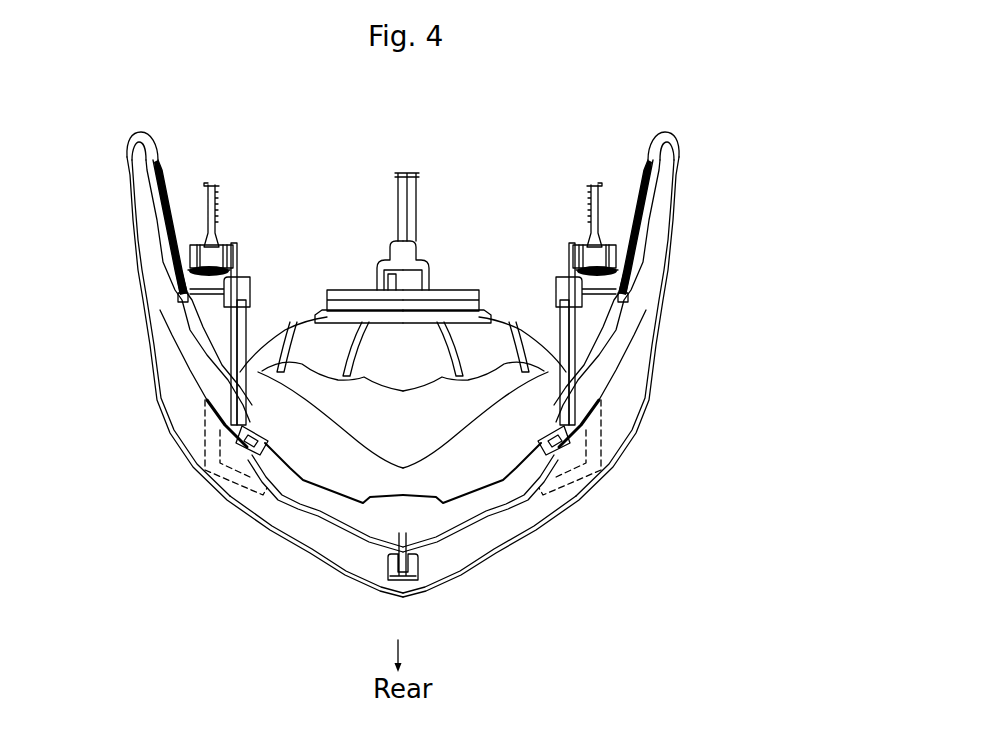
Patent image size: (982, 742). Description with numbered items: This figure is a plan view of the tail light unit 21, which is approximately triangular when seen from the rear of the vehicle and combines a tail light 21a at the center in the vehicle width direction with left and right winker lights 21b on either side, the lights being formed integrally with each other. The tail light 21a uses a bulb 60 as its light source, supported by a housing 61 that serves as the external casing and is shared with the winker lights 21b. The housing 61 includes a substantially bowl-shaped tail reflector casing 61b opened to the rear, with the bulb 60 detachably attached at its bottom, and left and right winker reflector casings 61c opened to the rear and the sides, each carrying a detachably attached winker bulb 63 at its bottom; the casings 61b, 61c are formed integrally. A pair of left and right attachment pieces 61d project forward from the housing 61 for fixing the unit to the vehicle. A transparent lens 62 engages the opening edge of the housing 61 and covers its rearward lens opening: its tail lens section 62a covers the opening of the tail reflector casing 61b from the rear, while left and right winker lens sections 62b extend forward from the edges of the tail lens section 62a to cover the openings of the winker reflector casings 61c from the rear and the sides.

The tail light unit 21 is at (758, 176).
The tail light 21a is at (452, 256).
The winker lights 21b is at (228, 205).
The bulb 60 is at (387, 258).
The housing 61 is at (165, 143).
The tail reflector casing 61b is at (497, 325).
The winker reflector casings 61c is at (245, 305).
The attachment pieces 61d is at (240, 252).
The lens 62 is at (548, 540).
The tail lens section 62a is at (449, 590).
The winker lens sections 62b is at (140, 313).
The winker bulbs 63 is at (195, 240).